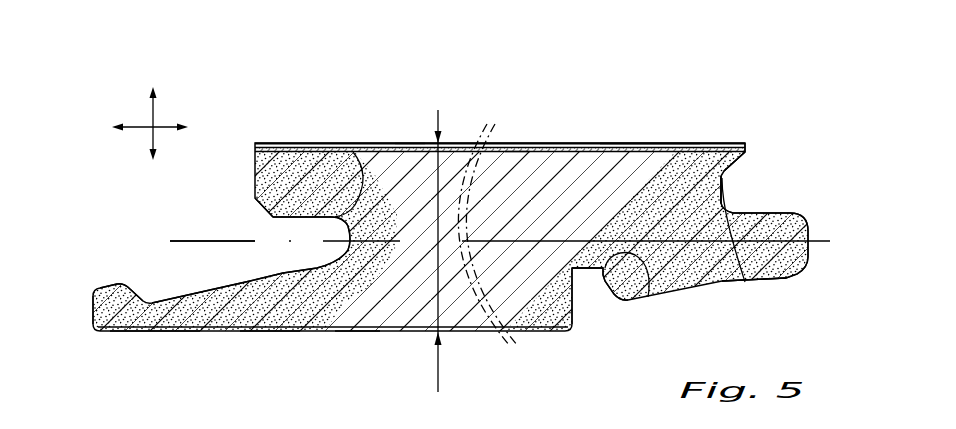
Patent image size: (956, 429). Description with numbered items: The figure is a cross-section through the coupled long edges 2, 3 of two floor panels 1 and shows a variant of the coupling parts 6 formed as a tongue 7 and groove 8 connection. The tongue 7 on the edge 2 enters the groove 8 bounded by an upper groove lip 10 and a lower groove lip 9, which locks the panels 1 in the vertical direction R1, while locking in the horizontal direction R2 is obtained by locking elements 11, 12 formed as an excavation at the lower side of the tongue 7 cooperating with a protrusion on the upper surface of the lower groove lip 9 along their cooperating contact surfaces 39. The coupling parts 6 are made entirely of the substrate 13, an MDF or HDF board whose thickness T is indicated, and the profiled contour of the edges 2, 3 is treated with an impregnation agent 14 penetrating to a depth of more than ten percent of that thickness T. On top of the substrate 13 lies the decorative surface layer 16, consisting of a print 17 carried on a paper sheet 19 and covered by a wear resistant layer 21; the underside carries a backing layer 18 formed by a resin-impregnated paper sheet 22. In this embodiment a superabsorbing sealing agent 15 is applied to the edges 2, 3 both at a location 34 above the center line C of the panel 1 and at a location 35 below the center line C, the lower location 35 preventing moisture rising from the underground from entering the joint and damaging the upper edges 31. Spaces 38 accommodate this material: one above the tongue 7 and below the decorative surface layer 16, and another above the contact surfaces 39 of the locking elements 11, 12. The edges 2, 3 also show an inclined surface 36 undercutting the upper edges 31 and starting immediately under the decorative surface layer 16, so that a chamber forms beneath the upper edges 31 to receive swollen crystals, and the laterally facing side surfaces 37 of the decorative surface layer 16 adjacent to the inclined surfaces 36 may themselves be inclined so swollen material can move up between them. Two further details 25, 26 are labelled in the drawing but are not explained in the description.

The panel 1 is at (578, 99).
The edge 2 is at (787, 193).
The edge 3 is at (136, 233).
The coupling parts 6 is at (199, 226).
The tongue 7 is at (748, 255).
The groove 8 is at (350, 148).
The lower groove lip 9 is at (227, 318).
The upper groove lip 10 is at (310, 143).
The locking element 11 is at (600, 297).
The locking element 12 is at (93, 310).
The substrate 13 is at (425, 265).
The impregnation agent 14 is at (292, 332).
The sealing agent 15 is at (647, 300).
The decorative surface layer 16 is at (746, 155).
The print 17 is at (408, 143).
The backing layer 18 is at (357, 332).
The paper sheet 19 is at (381, 143).
The wear resistant layer 21 is at (518, 143).
The paper sheet 22 is at (146, 331).
The top surface 25 is at (634, 127).
The bottom edge region 26 is at (268, 331).
The upper edges 31 is at (255, 143).
The location above the center line 34 is at (725, 175).
The location below the center line 35 is at (583, 280).
The inclined surface 36 is at (255, 162).
The laterally facing side surfaces 37 is at (255, 147).
The space 38 is at (577, 265).
The cooperating contact surfaces 39 is at (130, 296).
The center line C is at (236, 241).
The thickness T is at (438, 366).
The vertical direction R1 is at (150, 115).
The horizontal direction R2 is at (160, 134).